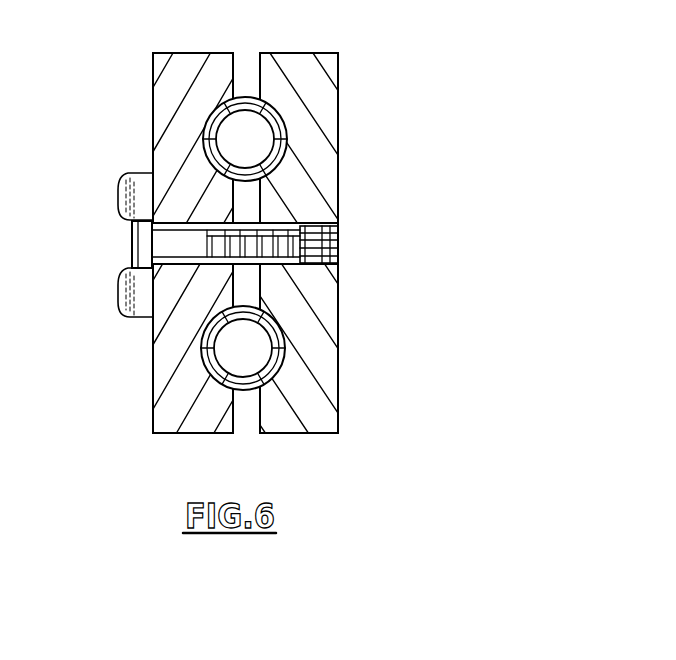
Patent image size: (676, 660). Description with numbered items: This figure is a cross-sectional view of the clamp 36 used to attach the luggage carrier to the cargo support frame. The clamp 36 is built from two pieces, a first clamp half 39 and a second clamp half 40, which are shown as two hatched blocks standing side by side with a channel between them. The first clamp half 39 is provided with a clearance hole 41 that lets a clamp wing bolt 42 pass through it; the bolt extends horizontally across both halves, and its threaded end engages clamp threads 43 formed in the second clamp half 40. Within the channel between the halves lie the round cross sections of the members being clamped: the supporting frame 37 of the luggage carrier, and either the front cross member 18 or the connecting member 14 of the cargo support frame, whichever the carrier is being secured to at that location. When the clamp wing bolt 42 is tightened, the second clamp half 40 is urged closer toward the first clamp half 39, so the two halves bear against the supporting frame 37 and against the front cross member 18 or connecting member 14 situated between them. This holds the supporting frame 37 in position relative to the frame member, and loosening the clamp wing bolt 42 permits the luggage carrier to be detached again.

The connecting member 14 is at (304, 396).
The front cross member 18 is at (243, 391).
The clamp 36 is at (430, 97).
The supporting frame 37 is at (245, 97).
The first clamp half 39 is at (185, 53).
The second clamp half 40 is at (330, 50).
The clearance hole 41 is at (153, 318).
The clamp wing bolt 42 is at (122, 268).
The clamp threads 43 is at (312, 268).